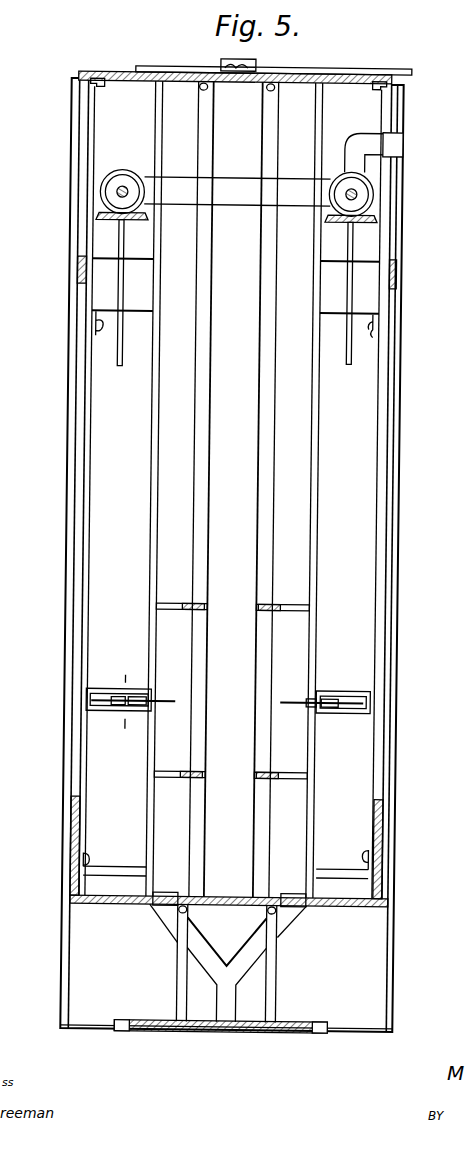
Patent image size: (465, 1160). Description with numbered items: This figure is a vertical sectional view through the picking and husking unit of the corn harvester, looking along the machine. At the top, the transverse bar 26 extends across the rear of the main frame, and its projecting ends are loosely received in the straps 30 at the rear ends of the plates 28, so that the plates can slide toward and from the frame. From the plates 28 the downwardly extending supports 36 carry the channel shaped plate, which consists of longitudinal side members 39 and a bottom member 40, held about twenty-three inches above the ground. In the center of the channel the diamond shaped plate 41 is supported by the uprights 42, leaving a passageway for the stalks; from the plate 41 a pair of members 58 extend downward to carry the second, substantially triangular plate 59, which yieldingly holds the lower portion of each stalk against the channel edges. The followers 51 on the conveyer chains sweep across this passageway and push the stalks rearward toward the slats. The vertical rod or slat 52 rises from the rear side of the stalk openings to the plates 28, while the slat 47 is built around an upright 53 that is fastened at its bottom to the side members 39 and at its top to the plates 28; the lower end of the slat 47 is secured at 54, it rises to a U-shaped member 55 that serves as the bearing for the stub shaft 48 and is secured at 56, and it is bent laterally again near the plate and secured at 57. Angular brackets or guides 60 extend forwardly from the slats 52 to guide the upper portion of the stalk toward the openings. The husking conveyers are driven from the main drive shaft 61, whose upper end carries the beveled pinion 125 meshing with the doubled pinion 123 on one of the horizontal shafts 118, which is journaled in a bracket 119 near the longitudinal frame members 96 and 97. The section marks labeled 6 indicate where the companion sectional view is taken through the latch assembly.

The transverse bar 26 is at (295, 67).
The plates 28 is at (95, 79).
The straps 30 is at (246, 60).
The supports 36 is at (66, 590).
The side members 39 is at (72, 854).
The bottom member 40 is at (107, 904).
The diamond shaped plate 41 is at (228, 906).
The uprights 42 is at (257, 462).
The slat 47 is at (157, 552).
The stub shaft 48 is at (327, 689).
The followers 51 is at (163, 697).
The vertical rod or slat 52 is at (157, 130).
The upright 53 is at (86, 605).
The securing point of slat lower end 54 is at (92, 858).
The U-shaped member 55 is at (104, 690).
The securing point of U-shaped member 56 is at (88, 702).
The securing point of slat upper end 57 is at (366, 325).
The members 58 is at (180, 965).
The second plate 59 is at (239, 1031).
The angular brackets or guides 60 is at (208, 611).
The main drive shaft 61 is at (121, 352).
The section line 6- 6 is at (118, 672).
The longitudinal frame member 96 is at (80, 272).
The longitudinal frame member 97 is at (394, 272).
The horizontal shafts 118 is at (112, 193).
The brackets 119 is at (225, 185).
The doubled pinion 123 is at (114, 172).
The beveled pinion 125 is at (100, 223).